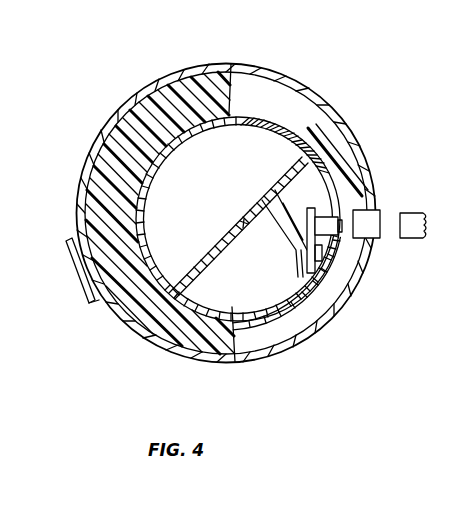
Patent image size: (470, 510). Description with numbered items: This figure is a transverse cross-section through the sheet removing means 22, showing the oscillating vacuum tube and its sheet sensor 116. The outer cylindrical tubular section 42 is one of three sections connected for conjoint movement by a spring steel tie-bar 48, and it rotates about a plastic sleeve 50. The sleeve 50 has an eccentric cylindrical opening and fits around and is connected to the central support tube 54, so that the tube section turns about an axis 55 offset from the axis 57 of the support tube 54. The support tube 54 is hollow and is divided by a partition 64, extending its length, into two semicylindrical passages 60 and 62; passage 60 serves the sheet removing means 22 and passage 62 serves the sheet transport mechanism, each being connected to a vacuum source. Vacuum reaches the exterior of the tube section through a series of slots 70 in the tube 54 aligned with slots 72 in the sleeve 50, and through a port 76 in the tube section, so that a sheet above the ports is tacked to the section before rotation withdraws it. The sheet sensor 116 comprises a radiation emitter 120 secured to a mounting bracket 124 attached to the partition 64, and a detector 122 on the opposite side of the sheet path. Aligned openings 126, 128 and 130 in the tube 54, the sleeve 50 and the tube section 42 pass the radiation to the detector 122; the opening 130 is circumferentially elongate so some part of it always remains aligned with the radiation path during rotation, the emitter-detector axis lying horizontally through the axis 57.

The sheet removing means 22 is at (345, 325).
The tubular section 42 is at (103, 135).
The tie-bar 48 is at (73, 272).
The plastic sleeve 50 is at (148, 122).
The central support tube 54 is at (194, 142).
The axis 55 is at (228, 212).
The axis 57 is at (246, 224).
The passage 60 is at (280, 158).
The passage 62 is at (245, 290).
The partition 64 is at (208, 250).
The slot 70 is at (258, 122).
The slot 72 is at (253, 83).
The port 76 is at (307, 90).
The sheet sensor 116 is at (405, 247).
The radiation emitter 120 is at (326, 214).
The detector 122 is at (417, 210).
The mounting bracket 124 is at (278, 243).
The opening 126 is at (372, 270).
The opening 128 is at (363, 210).
The opening 130 is at (363, 160).